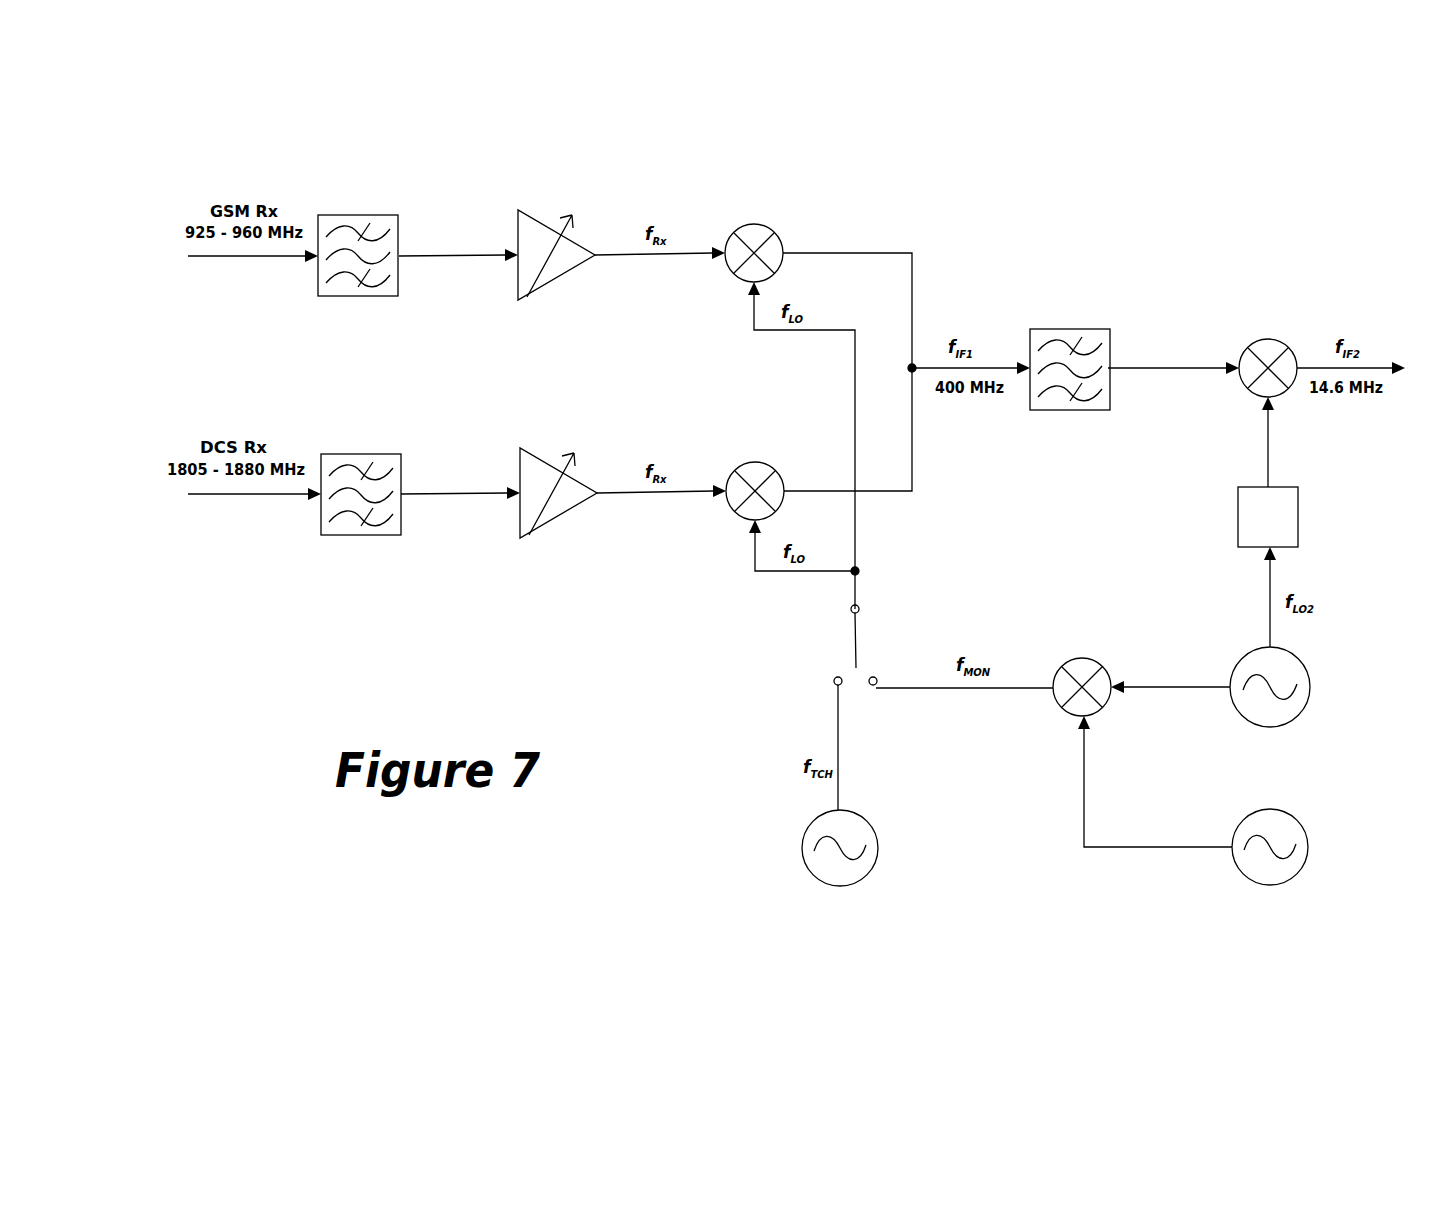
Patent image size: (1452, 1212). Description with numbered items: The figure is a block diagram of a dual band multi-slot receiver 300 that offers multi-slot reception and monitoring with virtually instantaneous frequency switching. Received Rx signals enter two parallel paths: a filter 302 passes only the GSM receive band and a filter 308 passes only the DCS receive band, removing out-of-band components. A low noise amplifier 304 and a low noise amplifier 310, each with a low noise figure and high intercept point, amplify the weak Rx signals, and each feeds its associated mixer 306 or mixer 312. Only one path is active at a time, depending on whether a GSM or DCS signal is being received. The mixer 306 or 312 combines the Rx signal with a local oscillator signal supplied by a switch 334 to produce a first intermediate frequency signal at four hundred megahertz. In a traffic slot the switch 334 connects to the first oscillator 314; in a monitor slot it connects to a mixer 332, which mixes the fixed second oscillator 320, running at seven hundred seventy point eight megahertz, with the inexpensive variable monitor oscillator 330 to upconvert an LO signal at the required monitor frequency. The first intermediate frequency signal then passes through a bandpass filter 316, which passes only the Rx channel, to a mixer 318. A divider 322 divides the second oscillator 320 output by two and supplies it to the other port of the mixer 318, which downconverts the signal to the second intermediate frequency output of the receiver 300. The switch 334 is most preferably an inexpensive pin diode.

The dual band receiver 300 is at (1043, 215).
The filter 302 is at (360, 215).
The low noise amplifier 304 is at (527, 215).
The mixer 306 is at (753, 224).
The filter 308 is at (362, 453).
The low noise amplifier 310 is at (528, 452).
The mixer 312 is at (757, 460).
The first local oscillator LO1 314 is at (878, 847).
The filter 316 is at (1072, 329).
The mixer 318 is at (1273, 340).
The second local oscillator LO2 320 is at (1311, 684).
The divider 322 is at (1298, 515).
The monitor local oscillator LO-MON 330 is at (1312, 845).
The mixer 332 is at (1083, 659).
The switch 334 is at (864, 622).